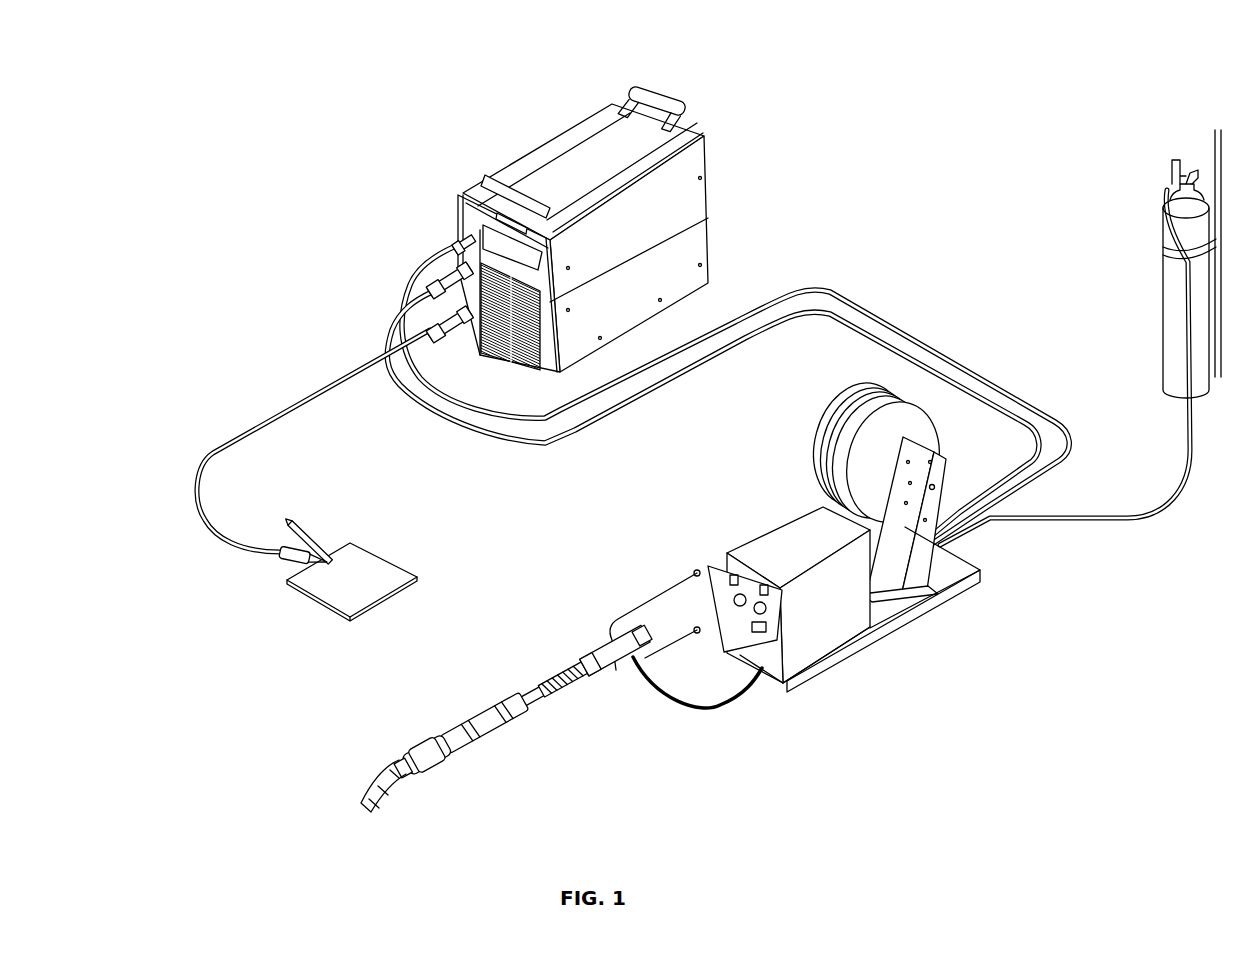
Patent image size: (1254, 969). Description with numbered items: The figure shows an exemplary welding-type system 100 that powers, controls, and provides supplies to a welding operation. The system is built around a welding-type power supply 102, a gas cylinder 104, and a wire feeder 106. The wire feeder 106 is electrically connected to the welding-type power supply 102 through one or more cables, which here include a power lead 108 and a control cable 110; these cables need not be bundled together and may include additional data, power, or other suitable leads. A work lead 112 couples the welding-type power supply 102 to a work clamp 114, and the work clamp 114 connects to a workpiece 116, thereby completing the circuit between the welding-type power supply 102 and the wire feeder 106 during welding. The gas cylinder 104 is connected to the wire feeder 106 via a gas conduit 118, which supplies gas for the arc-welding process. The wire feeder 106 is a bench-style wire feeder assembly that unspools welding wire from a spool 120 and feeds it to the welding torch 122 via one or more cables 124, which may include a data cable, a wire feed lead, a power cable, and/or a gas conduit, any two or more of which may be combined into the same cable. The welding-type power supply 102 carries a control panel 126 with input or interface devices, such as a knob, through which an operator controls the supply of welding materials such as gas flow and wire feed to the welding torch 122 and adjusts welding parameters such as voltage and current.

The welding-type system 100 is at (350, 82).
The welding-type power supply 102 is at (597, 152).
The gas cylinder 104 is at (1175, 305).
The wire feeder 106 is at (800, 533).
The power lead 108 is at (847, 320).
The control cable 110 is at (863, 303).
The work lead 112 is at (313, 397).
The work clamp 114 is at (287, 553).
The workpiece 116 is at (350, 550).
The gas conduit 118 is at (1080, 517).
The spool 120 is at (855, 417).
The welding torch 122 is at (443, 740).
The cables 124 is at (553, 678).
The control panel 126 is at (470, 193).